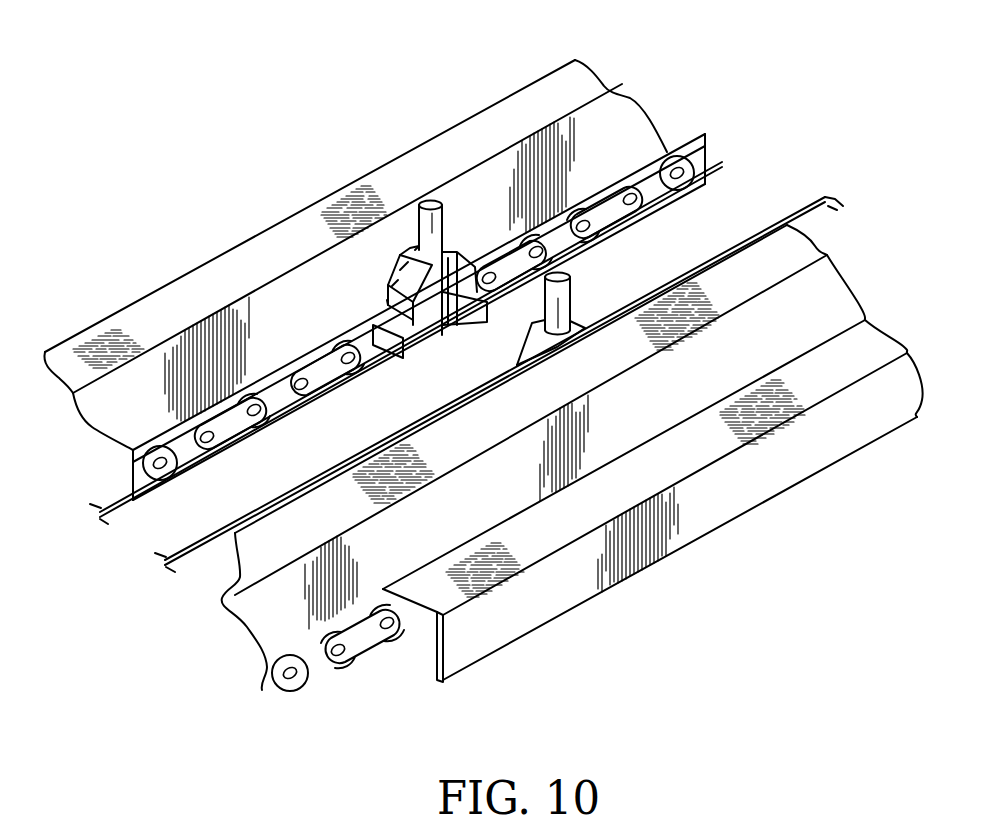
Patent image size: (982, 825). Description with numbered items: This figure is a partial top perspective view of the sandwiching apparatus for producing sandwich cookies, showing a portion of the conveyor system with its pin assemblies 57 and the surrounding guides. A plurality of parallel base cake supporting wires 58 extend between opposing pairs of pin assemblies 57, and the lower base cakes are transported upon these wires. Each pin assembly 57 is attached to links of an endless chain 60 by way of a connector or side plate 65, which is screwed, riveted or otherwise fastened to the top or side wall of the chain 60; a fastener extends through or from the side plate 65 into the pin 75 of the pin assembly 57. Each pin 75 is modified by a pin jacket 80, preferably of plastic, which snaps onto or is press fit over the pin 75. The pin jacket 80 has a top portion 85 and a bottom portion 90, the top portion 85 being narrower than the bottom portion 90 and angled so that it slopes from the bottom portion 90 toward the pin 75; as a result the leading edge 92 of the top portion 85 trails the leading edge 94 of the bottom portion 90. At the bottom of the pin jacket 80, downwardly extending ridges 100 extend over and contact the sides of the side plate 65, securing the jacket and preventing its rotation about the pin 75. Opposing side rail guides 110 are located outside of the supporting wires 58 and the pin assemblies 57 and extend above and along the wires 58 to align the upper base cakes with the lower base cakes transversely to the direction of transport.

The pin assembly 57 is at (453, 215).
The base cake supporting wire 58 is at (108, 518).
The endless chain 60 is at (687, 160).
The connector or side plate 65 is at (446, 327).
The pin 75 is at (424, 200).
The pin jacket 80 is at (405, 258).
The top portion 85 is at (400, 270).
The bottom portion 90 is at (392, 286).
The leading edge of the top portion 92 is at (415, 250).
The leading edge of the bottom portion 94 is at (387, 300).
The ridges 100 is at (408, 366).
The side rail guide 110 is at (100, 412).